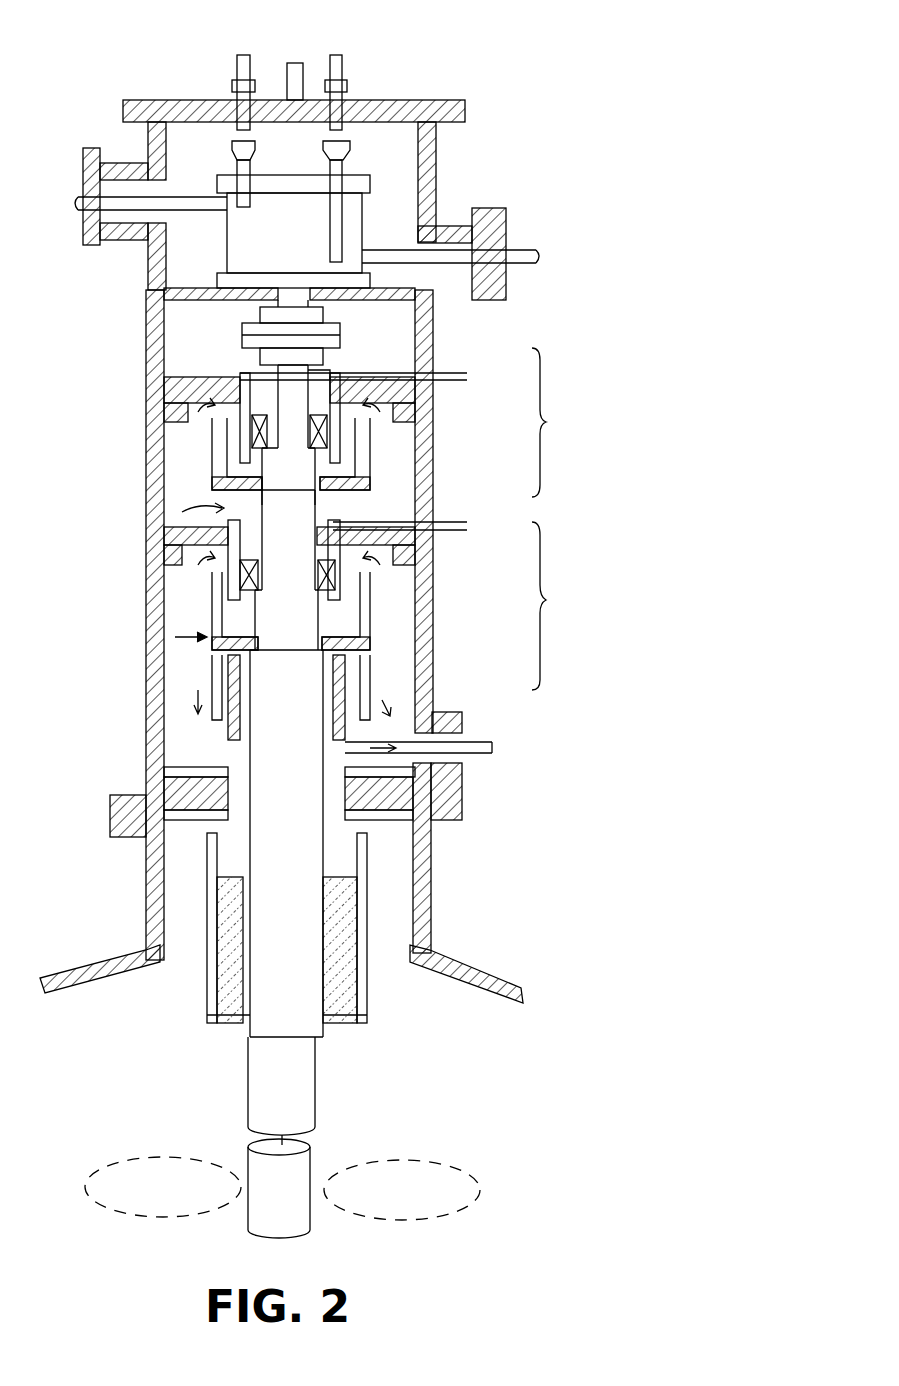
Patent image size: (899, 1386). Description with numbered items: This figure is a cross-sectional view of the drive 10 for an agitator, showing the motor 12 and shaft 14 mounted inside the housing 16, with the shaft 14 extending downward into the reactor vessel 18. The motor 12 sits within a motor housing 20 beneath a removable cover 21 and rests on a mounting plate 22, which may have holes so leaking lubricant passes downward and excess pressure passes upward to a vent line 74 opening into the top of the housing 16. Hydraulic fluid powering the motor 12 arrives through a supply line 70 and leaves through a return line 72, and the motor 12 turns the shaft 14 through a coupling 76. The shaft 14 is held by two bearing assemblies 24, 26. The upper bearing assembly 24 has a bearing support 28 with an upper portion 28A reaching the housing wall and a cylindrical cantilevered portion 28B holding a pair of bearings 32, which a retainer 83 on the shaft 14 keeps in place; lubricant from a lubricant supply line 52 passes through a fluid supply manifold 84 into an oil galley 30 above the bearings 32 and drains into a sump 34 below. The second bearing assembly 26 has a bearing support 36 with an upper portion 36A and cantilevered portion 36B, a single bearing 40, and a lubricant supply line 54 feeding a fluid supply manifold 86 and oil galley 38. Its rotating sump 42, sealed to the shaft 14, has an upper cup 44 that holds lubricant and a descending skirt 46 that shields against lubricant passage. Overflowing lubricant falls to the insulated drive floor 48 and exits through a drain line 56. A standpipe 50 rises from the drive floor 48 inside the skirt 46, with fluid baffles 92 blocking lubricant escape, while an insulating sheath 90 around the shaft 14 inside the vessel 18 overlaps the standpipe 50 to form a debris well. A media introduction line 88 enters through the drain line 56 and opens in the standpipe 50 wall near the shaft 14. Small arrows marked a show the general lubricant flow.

The drive 10 is at (480, 80).
The motor 12 is at (225, 175).
The shaft 14 is at (262, 878).
The housing 16 is at (146, 800).
The reactor vessel 18 is at (70, 965).
The motor housing 20 is at (437, 183).
The removable cover 21 is at (225, 105).
The mounting plate 22 is at (165, 286).
The bearing assembly 24 is at (557, 422).
The second bearing assembly 26 is at (557, 606).
The bearing support 28 is at (200, 380).
The upper portion 28A is at (170, 395).
The cantilevered portion 28B is at (240, 440).
The oil galley 30 is at (270, 368).
The bearings 32 is at (340, 470).
The sump 34 is at (215, 470).
The bearing support 36 is at (180, 535).
The upper portion 36A is at (175, 548).
The cantilevered portion 36B is at (232, 590).
The oil galley 38 is at (190, 508).
The bearing 40 is at (345, 632).
The sump 42 is at (200, 640).
The upper cup 44 is at (215, 600).
The descending skirt 46 is at (215, 665).
The drive floor 48 is at (215, 775).
The standpipe 50 is at (230, 765).
The lubricant supply line 52 is at (468, 376).
The lubricant supply line 54 is at (468, 527).
The drain line 56 is at (462, 780).
The supply line 70 is at (80, 200).
The return line 72 is at (538, 258).
The vent line 74 is at (297, 66).
The coupling 76 is at (245, 335).
The retainer 83 is at (332, 374).
The fluid supply manifold 84 is at (340, 440).
The fluid supply manifold 86 is at (340, 588).
The media introduction line 88 is at (478, 748).
The insulating sheath 90 is at (218, 925).
The fluid baffles 92 is at (230, 705).
The lubricant flow arrows a is at (380, 412).